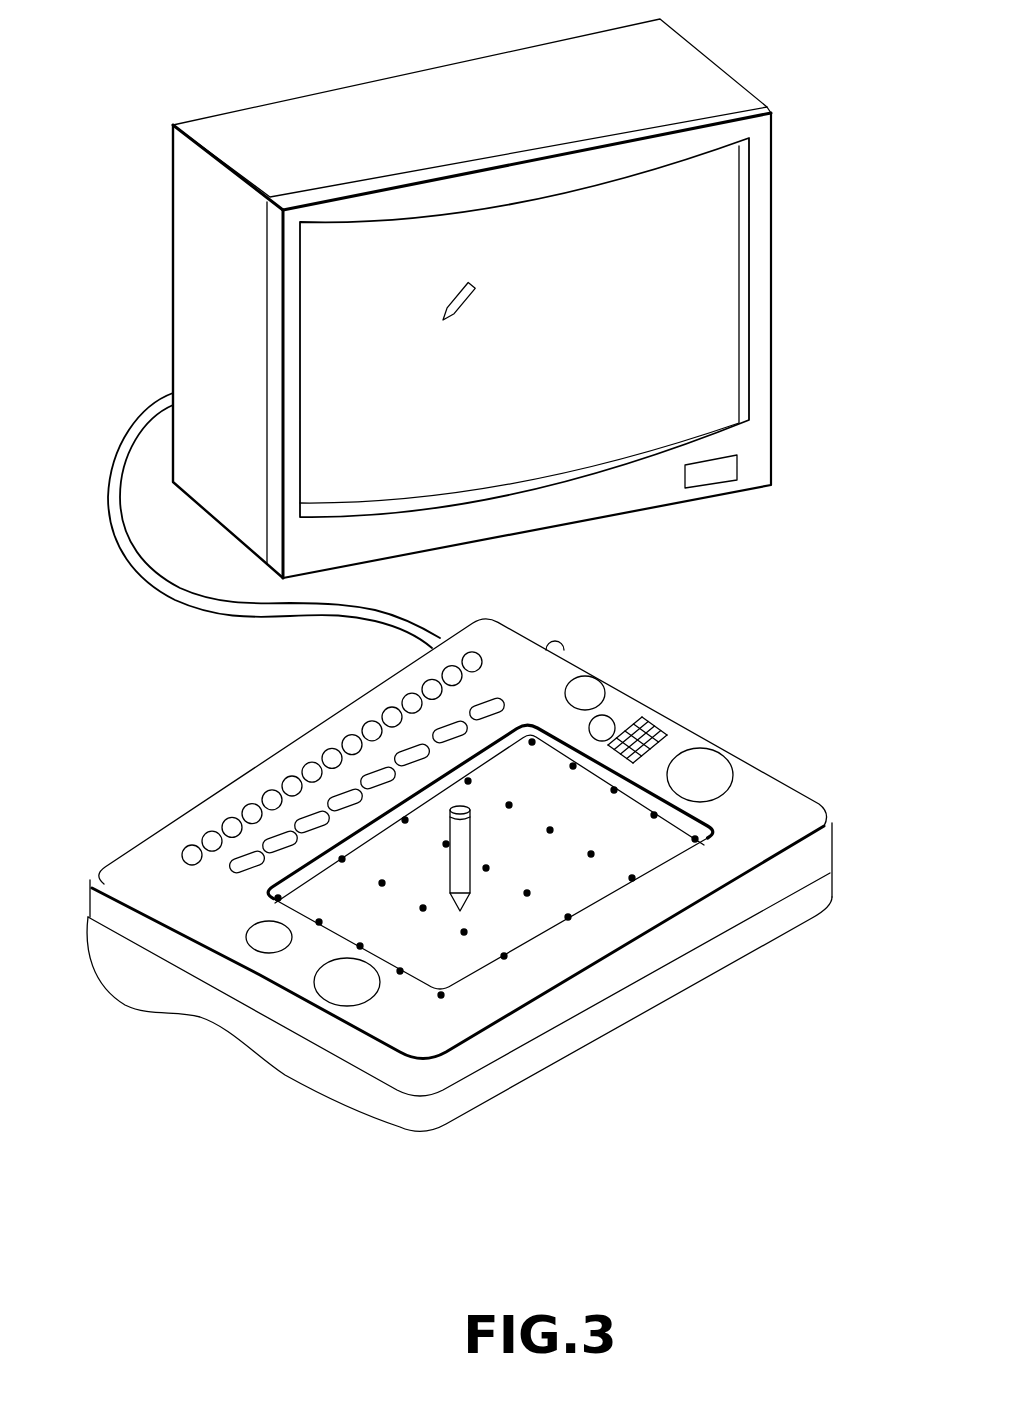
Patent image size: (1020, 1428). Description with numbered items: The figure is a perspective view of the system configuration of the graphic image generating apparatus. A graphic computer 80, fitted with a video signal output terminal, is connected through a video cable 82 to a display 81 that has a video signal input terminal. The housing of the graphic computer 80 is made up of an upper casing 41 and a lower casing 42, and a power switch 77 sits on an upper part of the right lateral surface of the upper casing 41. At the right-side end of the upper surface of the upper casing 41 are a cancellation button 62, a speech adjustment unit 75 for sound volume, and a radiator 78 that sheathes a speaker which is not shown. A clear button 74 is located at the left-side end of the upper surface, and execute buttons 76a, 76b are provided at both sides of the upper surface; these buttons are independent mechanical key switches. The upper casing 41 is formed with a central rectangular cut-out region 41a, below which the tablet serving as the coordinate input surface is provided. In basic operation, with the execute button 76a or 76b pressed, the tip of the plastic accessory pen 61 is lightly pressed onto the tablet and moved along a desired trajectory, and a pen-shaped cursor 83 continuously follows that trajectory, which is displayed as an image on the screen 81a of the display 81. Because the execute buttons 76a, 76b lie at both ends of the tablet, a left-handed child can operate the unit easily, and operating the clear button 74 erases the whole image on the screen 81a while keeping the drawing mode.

The upper casing 41 is at (93, 897).
The central rectangular cut-out region 41a is at (472, 985).
The lower casing 42 is at (113, 970).
The accessory pen 61 is at (463, 878).
The cancellation button 62 is at (600, 682).
The clear button 74 is at (258, 953).
The speech adjustment unit 75 is at (606, 726).
The execute button 76a is at (335, 1007).
The execute button 76b is at (732, 762).
The power switch 77 is at (562, 645).
The radiator 78 is at (670, 732).
The graphic computer 80 is at (447, 874).
The display 81 is at (481, 289).
The screen 81a is at (582, 258).
The video cable 82 is at (172, 595).
The cursor 83 is at (449, 292).